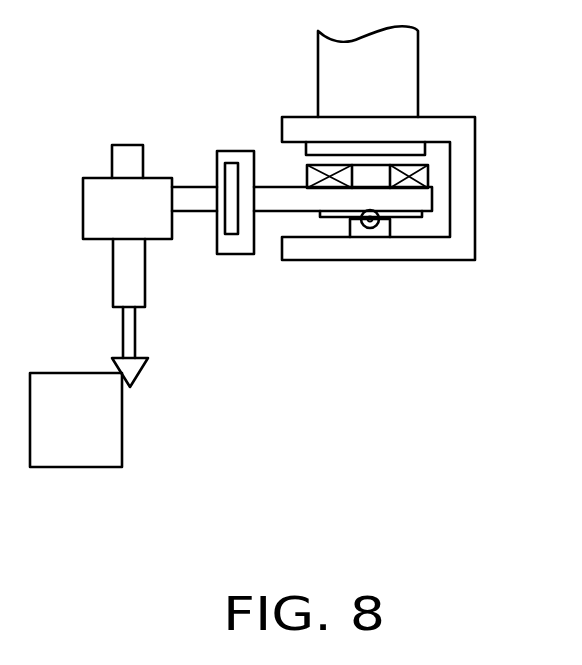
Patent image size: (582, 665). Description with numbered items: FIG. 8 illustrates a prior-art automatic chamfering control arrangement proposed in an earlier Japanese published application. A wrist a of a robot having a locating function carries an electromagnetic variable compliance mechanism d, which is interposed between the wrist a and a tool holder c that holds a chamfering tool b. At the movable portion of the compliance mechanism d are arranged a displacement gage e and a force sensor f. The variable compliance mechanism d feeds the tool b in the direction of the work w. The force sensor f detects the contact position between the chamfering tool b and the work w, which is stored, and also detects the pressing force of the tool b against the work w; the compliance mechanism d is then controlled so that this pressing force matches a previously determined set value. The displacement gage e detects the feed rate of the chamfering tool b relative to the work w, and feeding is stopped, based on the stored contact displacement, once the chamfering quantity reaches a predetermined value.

The wrist a is at (418, 89).
The chamfering tool b is at (145, 366).
The tool holder c is at (158, 177).
The electromagnetic variable compliance mechanism d is at (428, 176).
The displacement gage e is at (373, 228).
The force sensor f is at (240, 254).
The work w is at (122, 450).